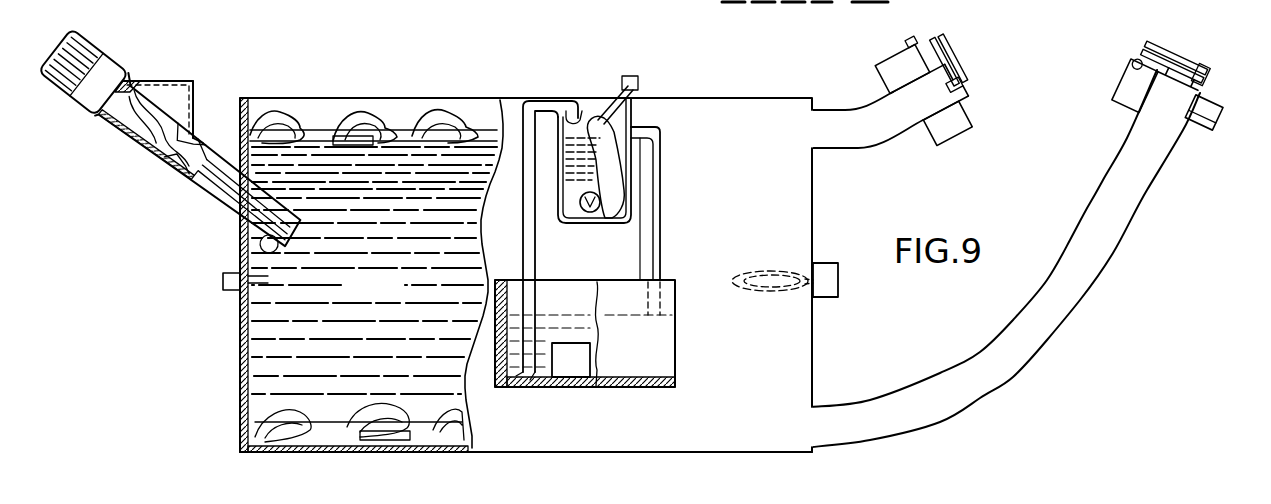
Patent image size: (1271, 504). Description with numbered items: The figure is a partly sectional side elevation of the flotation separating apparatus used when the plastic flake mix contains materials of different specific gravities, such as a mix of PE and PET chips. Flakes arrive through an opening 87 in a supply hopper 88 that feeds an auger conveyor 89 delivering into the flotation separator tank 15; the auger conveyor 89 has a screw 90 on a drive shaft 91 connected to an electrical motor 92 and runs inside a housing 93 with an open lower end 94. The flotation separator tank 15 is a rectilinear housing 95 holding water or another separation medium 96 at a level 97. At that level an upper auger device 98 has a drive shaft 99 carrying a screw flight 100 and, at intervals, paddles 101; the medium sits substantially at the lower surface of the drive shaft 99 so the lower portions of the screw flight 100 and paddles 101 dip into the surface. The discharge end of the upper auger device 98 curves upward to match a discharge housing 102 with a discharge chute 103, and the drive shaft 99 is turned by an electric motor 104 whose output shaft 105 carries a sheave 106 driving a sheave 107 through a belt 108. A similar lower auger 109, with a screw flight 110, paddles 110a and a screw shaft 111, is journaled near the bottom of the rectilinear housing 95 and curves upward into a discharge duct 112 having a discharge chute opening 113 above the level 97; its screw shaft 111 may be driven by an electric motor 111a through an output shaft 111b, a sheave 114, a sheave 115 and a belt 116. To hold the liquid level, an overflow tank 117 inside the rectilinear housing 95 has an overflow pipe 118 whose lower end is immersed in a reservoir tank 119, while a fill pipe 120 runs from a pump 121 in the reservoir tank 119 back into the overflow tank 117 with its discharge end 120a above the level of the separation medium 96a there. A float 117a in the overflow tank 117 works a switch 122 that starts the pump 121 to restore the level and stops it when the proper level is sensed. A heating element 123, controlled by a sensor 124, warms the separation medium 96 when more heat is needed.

The flotation separator tank 15 is at (226, 366).
The opening 87 is at (165, 78).
The supply hopper 88 is at (196, 112).
The auger conveyor 89 is at (180, 178).
The screw 90 is at (160, 162).
The drive shaft 91 is at (128, 138).
The electrical motor 92 is at (92, 58).
The housing 93 is at (225, 196).
The open lower end 94 is at (244, 246).
The rectilinear housing 95 is at (239, 349).
The separation medium 96 is at (390, 297).
The separation medium in overflow tank 96a is at (538, 215).
The level 97 is at (430, 141).
The upper auger device 98 is at (392, 103).
The drive shaft 99 is at (478, 125).
The screw flight 100 is at (455, 112).
The paddles 101 is at (343, 136).
The discharge housing 102 is at (856, 148).
The discharge chute 103 is at (957, 138).
The electric motor 104 is at (878, 80).
The output shaft 105 is at (908, 40).
The sheave 106 is at (955, 40).
The sheave 107 is at (962, 84).
The belt 108 is at (968, 60).
The auger 109 is at (250, 452).
The screw flight 110 is at (240, 410).
The paddles 110a is at (383, 430).
The screw shaft 111 is at (432, 435).
The electric motor 111a is at (1125, 108).
The output shaft 111b is at (1133, 64).
The discharge duct 112 is at (957, 372).
The discharge chute opening 113 is at (1222, 118).
The sheave 114 is at (1150, 48).
The sheave 115 is at (1208, 70).
The belt 116 is at (1178, 68).
The overflow tank 117 is at (618, 162).
The float 117a is at (618, 117).
The overflow pipe 118 is at (662, 212).
The reservoir tank 119 is at (660, 358).
The fill pipe 120 is at (540, 262).
The discharge end 120a is at (576, 110).
The pump 121 is at (565, 380).
The switch 122 is at (640, 82).
The heating element 123 is at (772, 272).
The sensor 124 is at (824, 298).